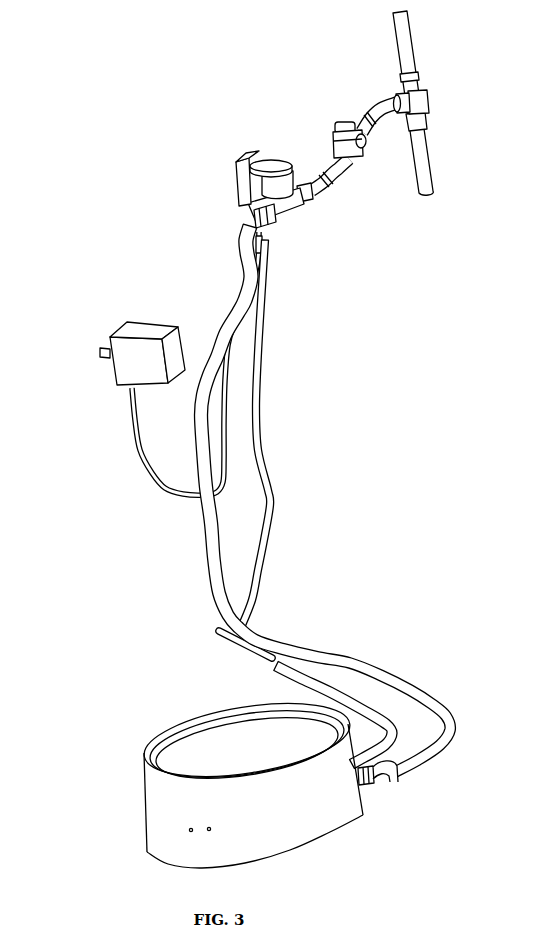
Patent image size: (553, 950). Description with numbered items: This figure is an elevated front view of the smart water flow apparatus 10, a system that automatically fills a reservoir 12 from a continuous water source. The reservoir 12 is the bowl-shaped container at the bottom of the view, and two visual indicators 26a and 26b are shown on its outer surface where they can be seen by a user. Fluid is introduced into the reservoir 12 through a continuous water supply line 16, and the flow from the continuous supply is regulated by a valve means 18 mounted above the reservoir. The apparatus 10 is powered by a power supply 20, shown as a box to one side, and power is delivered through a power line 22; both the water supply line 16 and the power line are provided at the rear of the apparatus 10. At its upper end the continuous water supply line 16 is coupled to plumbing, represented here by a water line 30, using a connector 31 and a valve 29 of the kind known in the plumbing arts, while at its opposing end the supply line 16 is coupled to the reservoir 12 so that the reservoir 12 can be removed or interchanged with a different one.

The smart water flow apparatus 10 is at (55, 153).
The reservoir 12 is at (305, 810).
The continuous water supply line 16 is at (208, 527).
The valve means 18 is at (273, 165).
The power supply 20 is at (118, 352).
The power line 22 is at (272, 498).
The visual indicator 26a is at (212, 831).
The visual indicator 26b is at (189, 836).
The valve 29 is at (353, 137).
The water line 30 is at (422, 162).
The connector 31 is at (422, 99).